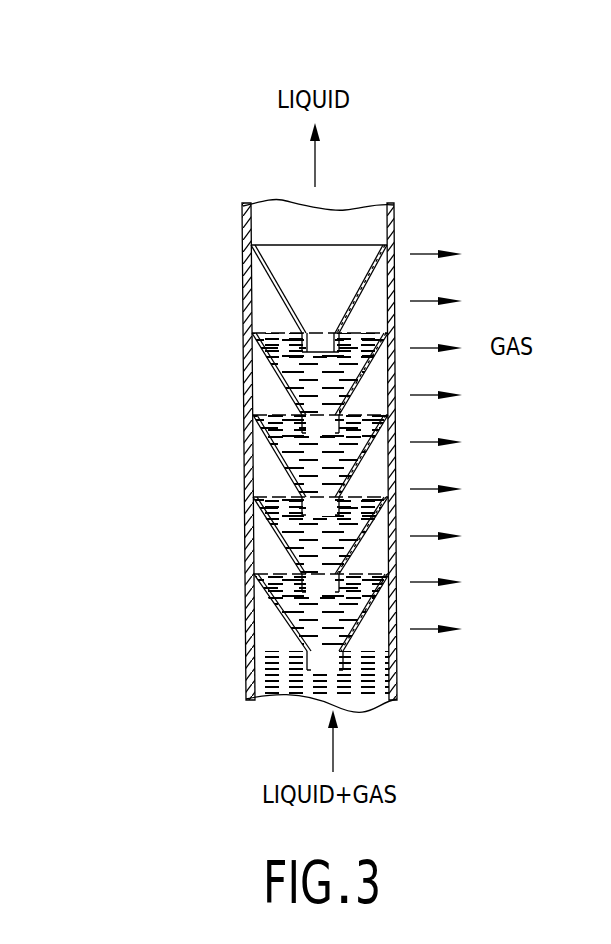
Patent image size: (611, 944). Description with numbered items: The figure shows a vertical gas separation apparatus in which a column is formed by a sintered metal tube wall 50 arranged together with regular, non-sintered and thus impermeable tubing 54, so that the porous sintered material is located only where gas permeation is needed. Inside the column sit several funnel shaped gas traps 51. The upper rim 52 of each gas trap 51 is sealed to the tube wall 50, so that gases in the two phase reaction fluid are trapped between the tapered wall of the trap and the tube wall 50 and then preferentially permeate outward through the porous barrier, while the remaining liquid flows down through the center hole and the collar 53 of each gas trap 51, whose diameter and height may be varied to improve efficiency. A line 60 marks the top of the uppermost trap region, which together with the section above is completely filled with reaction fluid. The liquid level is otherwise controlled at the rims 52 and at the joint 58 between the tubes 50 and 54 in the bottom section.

The tube wall 50 is at (246, 540).
The gas trap 51 is at (292, 316).
The upper rim 52 is at (251, 249).
The collar 53 is at (278, 373).
The tubing 54 is at (243, 224).
The joint 58 is at (245, 639).
The top plate 60 is at (248, 246).